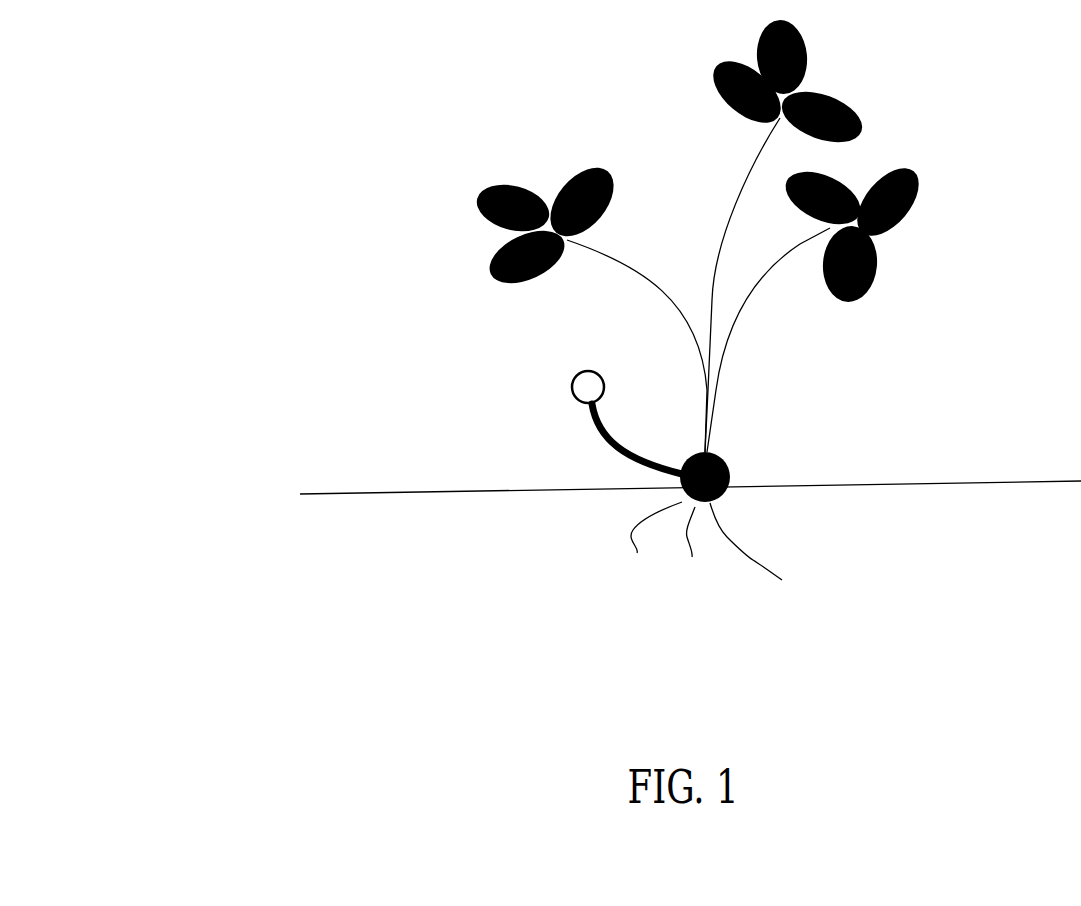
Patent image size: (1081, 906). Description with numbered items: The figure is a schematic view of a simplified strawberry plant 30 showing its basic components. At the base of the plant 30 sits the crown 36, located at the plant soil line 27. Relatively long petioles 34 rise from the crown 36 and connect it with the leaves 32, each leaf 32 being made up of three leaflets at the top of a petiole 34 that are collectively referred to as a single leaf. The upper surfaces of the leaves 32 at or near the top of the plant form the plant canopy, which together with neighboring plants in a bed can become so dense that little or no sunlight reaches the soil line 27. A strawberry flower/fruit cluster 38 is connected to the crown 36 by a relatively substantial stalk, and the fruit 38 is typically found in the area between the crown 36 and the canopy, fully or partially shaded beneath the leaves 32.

The plant soil line 27 is at (477, 493).
The strawberry plant 30 is at (297, 175).
The leaves 32 is at (500, 183).
The petioles 34 is at (757, 283).
The crown 36 is at (727, 467).
The flower/fruit cluster 38 is at (572, 375).